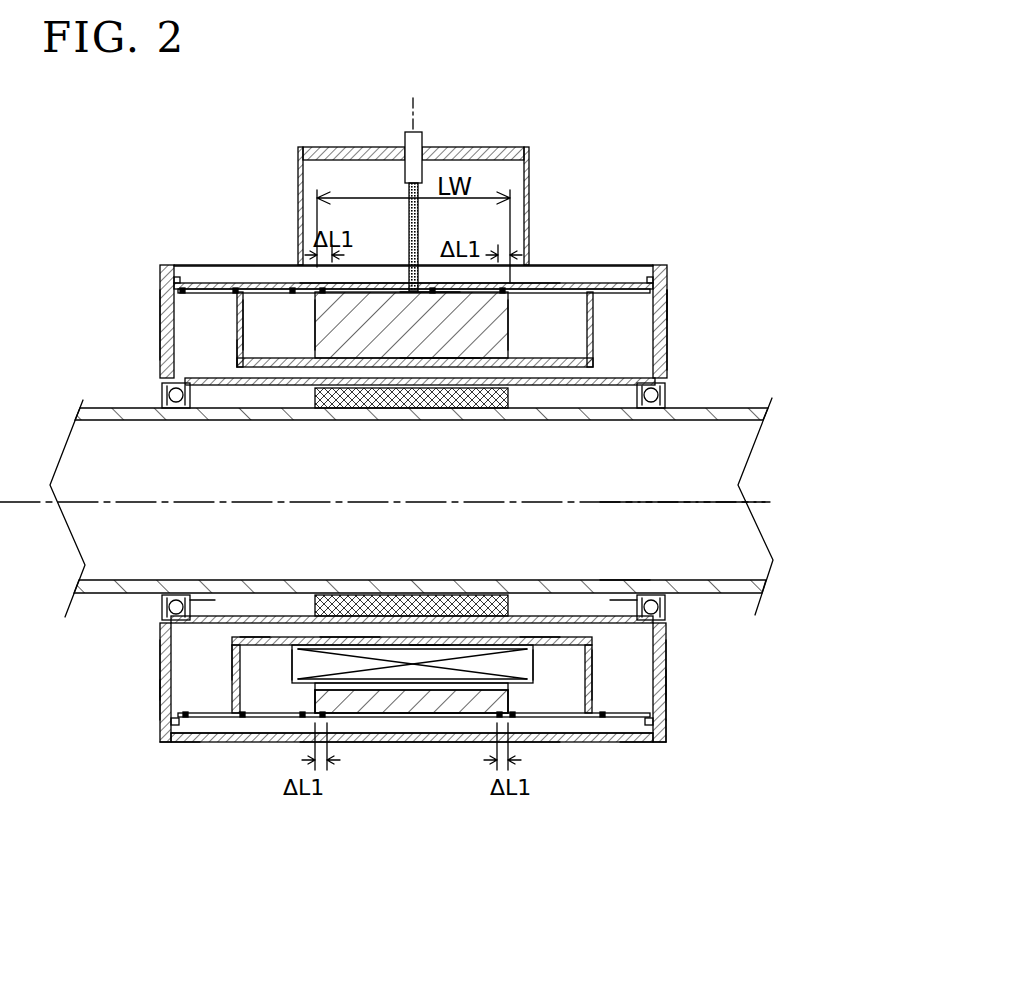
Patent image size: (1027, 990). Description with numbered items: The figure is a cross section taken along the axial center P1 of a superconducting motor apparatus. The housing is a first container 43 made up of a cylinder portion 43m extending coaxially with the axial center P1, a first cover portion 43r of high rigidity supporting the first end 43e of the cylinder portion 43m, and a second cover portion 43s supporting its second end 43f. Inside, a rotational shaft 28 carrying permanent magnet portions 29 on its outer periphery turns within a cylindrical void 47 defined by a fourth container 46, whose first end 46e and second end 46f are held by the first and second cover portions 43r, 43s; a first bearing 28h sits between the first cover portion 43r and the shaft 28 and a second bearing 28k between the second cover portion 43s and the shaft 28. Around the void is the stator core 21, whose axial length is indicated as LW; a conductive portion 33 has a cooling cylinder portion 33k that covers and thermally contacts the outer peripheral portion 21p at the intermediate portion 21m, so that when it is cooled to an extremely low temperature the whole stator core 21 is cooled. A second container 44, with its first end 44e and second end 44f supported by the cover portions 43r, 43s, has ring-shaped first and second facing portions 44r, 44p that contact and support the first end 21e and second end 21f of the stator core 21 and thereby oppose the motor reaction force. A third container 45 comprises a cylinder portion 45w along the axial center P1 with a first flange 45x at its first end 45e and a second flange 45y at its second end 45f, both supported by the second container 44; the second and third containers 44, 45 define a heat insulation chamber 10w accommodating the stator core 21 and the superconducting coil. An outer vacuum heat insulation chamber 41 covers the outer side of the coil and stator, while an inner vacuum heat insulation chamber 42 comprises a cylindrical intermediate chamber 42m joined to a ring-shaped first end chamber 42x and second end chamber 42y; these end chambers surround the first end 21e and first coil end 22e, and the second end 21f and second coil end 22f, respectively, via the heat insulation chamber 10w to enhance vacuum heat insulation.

The heat insulation chamber 10w is at (253, 320).
The stator core 21 is at (592, 330).
The first end of the stator core 21e is at (316, 335).
The second end of the stator core 21f is at (594, 342).
The intermediate portion of the stator core 21m is at (509, 345).
The outer peripheral portion of the stator core 21p is at (413, 720).
The first end of the superconducting coil 22e is at (298, 663).
The second end of the superconducting coil 22f is at (667, 705).
The rotational shaft 28 is at (432, 511).
The first bearing 28h is at (162, 610).
The second bearing 28k is at (667, 603).
The permanent magnet portions 29 is at (400, 406).
The conductive portion 33 is at (367, 283).
The cooling cylinder portion 33k is at (365, 720).
The outer vacuum heat insulation chamber 41 is at (197, 273).
The inner vacuum heat insulation chamber 42 is at (350, 369).
The intermediate chamber 42m is at (430, 637).
The first end chamber 42x is at (158, 687).
The second end chamber 42y is at (666, 740).
The first container 43 is at (557, 742).
The first end of the cylinder portion 43e is at (177, 742).
The second end of the cylinder portion 43f is at (648, 742).
The cylinder portion 43m is at (643, 265).
The first cover portion 43r is at (234, 337).
The second cover portion 43s is at (669, 365).
The second container 44 is at (275, 289).
The first end of the second container 44e is at (192, 720).
The second end of the second container 44f is at (630, 720).
The second facing portion 44p is at (515, 293).
The first facing portion 44r is at (290, 289).
The third container 45 is at (575, 383).
The first end of the cylinder portion of the third container 45e is at (253, 640).
The second end of the cylinder portion of the third container 45f is at (534, 637).
The cylinder portion of the third container 45w is at (440, 364).
The first flange 45x is at (234, 357).
The second flange 45y is at (668, 305).
The fourth container 46 is at (532, 392).
The first end of the fourth container 46e is at (203, 627).
The second end of the fourth container 46f is at (618, 608).
The void 47 is at (230, 398).
The axial center P1 is at (765, 500).